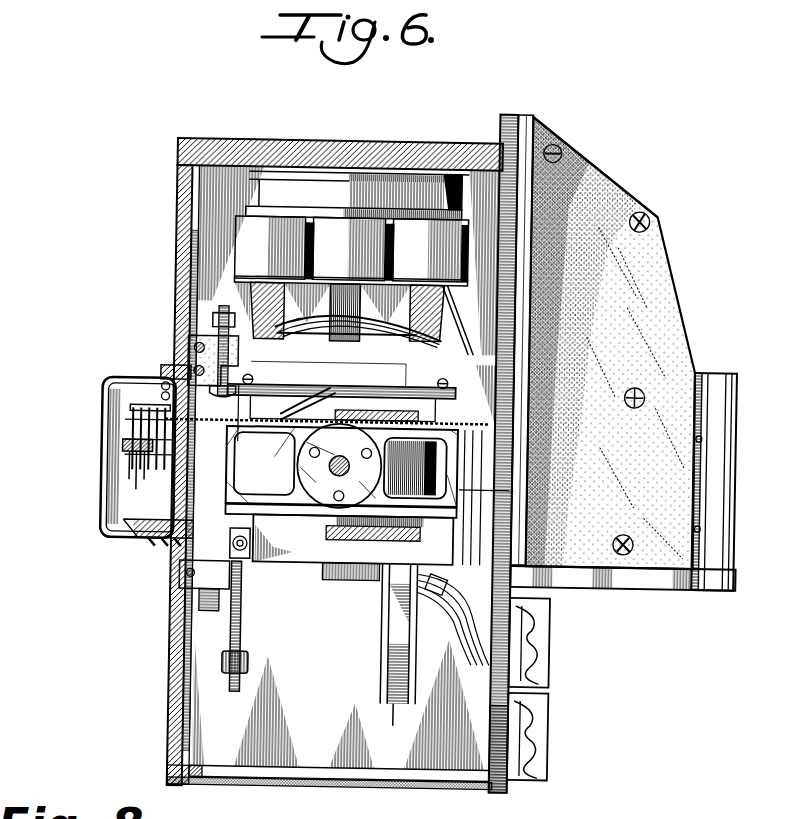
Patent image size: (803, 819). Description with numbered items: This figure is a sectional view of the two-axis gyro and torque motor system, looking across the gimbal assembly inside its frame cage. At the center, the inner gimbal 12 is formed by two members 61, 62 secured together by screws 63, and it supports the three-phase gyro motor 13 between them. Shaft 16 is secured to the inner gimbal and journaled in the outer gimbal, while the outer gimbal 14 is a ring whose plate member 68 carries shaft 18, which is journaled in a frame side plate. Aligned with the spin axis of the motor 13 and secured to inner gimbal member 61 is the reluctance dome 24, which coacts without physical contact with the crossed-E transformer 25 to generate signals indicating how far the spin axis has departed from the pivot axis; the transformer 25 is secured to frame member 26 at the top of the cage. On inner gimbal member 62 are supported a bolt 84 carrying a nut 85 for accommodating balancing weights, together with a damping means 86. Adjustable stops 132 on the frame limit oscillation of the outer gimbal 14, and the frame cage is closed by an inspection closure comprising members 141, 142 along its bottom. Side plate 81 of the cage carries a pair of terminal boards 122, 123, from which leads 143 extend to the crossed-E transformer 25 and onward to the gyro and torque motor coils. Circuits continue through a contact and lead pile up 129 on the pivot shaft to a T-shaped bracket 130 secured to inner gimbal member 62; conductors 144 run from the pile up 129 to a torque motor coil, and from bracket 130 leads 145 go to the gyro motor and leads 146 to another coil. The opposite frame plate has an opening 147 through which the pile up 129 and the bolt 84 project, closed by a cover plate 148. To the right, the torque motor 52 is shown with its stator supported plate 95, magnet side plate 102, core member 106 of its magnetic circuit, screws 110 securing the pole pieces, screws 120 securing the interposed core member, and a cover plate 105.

The inner gimbal 12 is at (288, 563).
The gyro motor 13 is at (352, 568).
The outer gimbal 14 is at (500, 433).
The shaft 16 is at (520, 458).
The shaft 18 is at (356, 463).
The reluctance dome 24 is at (385, 352).
The crossed-E transformer 25 is at (470, 202).
The frame member 26 is at (352, 138).
The torque motor 52 is at (687, 311).
The inner gimbal member 61 is at (400, 383).
The inner gimbal member 62 is at (258, 513).
The screws 63 is at (255, 373).
The outer gimbal plate member 68 is at (520, 485).
The side plate 81 is at (178, 774).
The bolt 84 is at (250, 623).
The nut 85 is at (231, 664).
The damping means 86 is at (400, 640).
The stator supported plate 95 is at (509, 787).
The side plate 102 is at (646, 583).
The cover plate 105 is at (728, 452).
The core member 106 is at (660, 262).
The screws 110 is at (632, 527).
The screws 120 is at (562, 147).
The terminal board 122 is at (558, 730).
The terminal board 123 is at (558, 638).
The contact and lead pile up 129 is at (120, 480).
The T-shaped bracket 130 is at (125, 512).
The adjustable stops 132 is at (218, 335).
The inspection closure member 141 is at (206, 768).
The inspection closure member 142 is at (245, 786).
The leads 143 is at (495, 570).
The conductors 144 is at (357, 369).
The leads 145 is at (126, 540).
The leads 146 is at (172, 546).
The opening 147 is at (168, 368).
The cover plate 148 is at (107, 402).